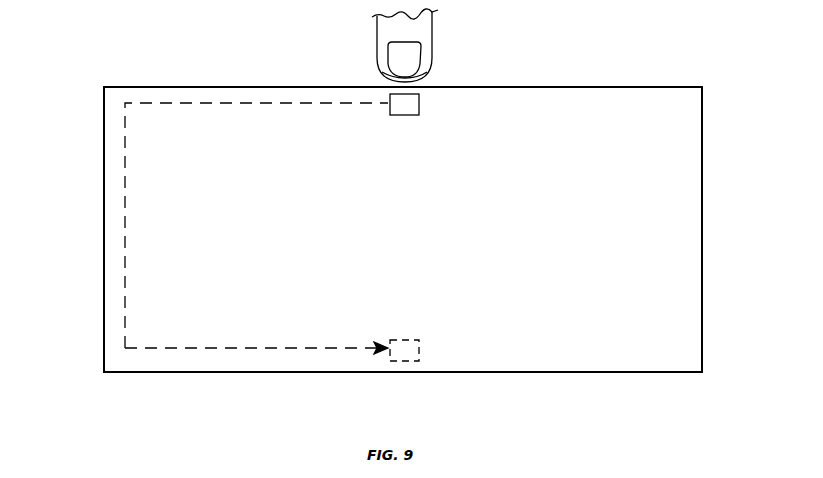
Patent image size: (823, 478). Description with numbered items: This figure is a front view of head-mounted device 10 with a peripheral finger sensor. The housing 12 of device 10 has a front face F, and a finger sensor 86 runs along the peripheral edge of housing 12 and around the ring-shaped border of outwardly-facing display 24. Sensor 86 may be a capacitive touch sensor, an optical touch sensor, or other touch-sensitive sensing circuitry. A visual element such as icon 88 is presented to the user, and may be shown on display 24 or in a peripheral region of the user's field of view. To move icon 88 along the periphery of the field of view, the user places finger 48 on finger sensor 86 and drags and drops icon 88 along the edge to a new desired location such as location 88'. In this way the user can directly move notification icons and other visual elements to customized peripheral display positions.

The device 10 is at (68, 84).
The housing 12 is at (702, 240).
The outwardly-facing display 24 is at (635, 347).
The front face F is at (552, 345).
The finger 48 is at (424, 33).
The finger sensor 86 is at (248, 86).
The icon 88 is at (435, 105).
The location 88' is at (438, 351).